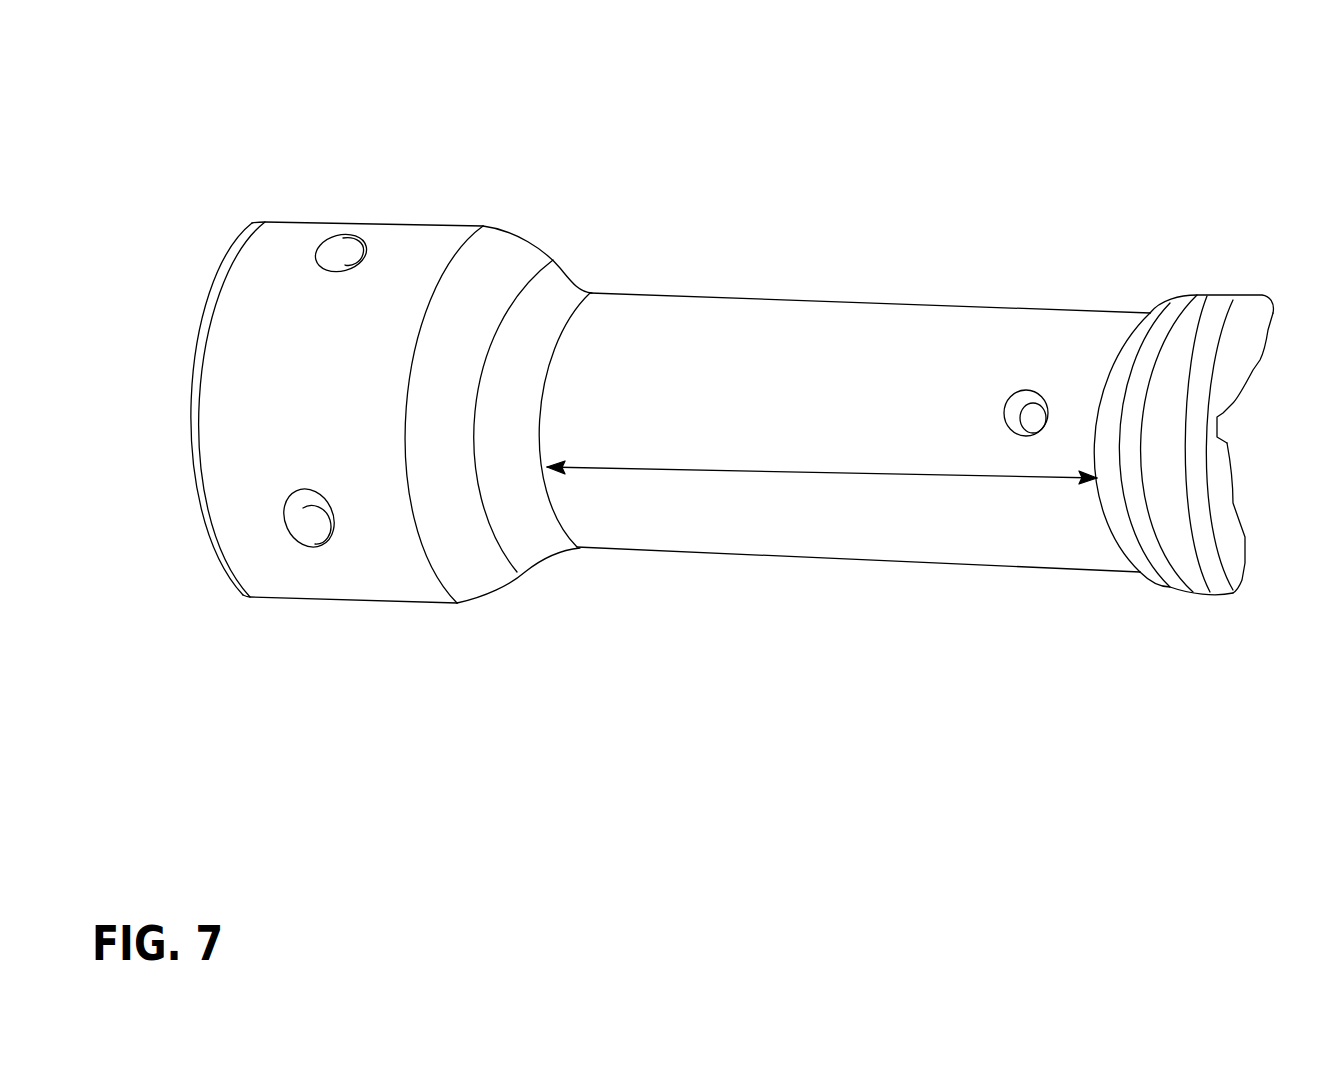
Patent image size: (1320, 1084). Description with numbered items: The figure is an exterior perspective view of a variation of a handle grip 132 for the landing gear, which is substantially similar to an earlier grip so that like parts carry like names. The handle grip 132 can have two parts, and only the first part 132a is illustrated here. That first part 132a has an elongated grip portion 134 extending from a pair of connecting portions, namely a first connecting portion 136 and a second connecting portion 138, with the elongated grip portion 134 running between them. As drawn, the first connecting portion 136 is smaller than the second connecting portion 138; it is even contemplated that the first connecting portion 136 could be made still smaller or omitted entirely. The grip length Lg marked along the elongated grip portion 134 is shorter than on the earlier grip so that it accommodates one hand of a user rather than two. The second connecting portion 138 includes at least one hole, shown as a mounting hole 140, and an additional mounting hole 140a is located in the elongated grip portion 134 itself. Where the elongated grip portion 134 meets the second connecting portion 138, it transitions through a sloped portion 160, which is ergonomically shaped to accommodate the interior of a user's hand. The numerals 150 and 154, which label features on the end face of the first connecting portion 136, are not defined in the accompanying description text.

The handle grip 132 is at (373, 70).
The first part 132a is at (827, 249).
The elongated grip portion 134 is at (655, 322).
The first connecting portion 136 is at (1177, 328).
The second connecting portion 138 is at (285, 297).
The mounting hole 140 is at (348, 252).
The additional mounting hole 140a is at (1012, 402).
The recess 150 is at (1223, 427).
The slot 154 is at (1223, 445).
The sloped portion 160 is at (528, 295).